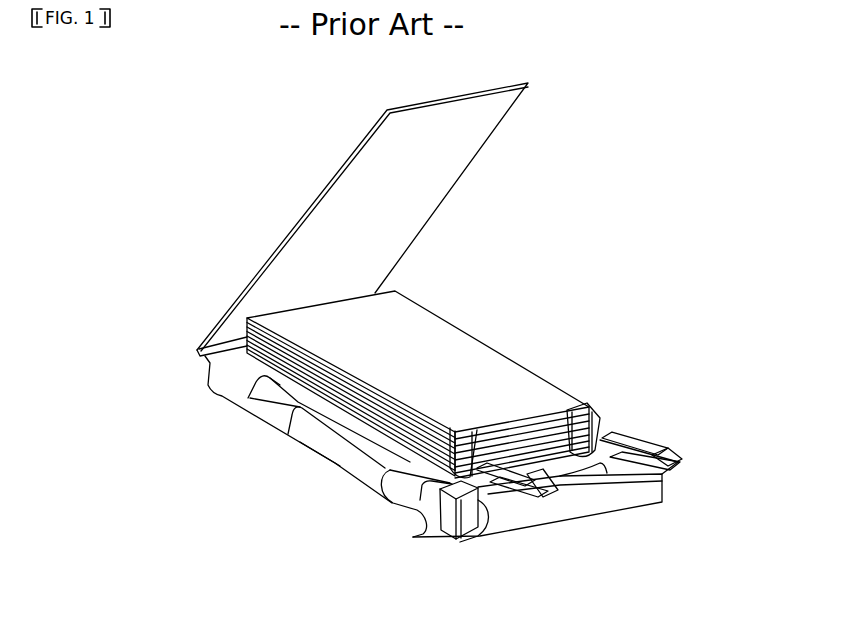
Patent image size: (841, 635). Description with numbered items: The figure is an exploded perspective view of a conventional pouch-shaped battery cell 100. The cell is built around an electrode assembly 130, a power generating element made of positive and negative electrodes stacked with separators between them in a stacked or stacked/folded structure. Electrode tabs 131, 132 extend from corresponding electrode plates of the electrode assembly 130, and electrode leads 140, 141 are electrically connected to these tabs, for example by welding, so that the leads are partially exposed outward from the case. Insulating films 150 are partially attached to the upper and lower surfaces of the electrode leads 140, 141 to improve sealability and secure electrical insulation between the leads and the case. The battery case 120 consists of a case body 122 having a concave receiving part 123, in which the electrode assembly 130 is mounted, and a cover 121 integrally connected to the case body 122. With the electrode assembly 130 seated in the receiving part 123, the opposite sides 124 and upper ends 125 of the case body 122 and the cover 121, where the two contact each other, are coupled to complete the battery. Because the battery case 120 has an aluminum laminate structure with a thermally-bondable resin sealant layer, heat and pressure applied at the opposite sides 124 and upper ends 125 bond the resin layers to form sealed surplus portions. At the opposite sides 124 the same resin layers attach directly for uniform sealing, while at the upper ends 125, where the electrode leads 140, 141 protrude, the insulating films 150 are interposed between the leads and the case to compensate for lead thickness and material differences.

The pouch-shaped battery cell 100 is at (187, 117).
The battery case 120 is at (195, 348).
The cover 121 is at (264, 263).
The case body 122 is at (340, 466).
The receiving part 123 is at (248, 398).
The opposite sides 124 is at (288, 434).
The upper ends 125 is at (603, 465).
The electrode assembly 130 is at (478, 311).
The electrode tab 131 is at (389, 503).
The electrode tab 132 is at (598, 421).
The electrode lead 140 is at (427, 522).
The electrode lead 141 is at (630, 440).
The insulating film 150 is at (480, 535).